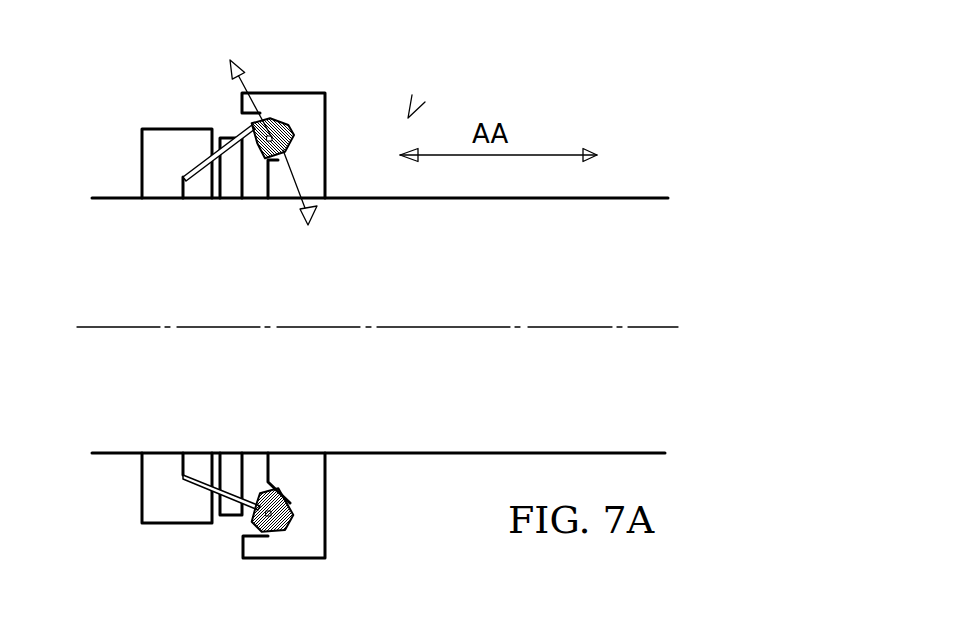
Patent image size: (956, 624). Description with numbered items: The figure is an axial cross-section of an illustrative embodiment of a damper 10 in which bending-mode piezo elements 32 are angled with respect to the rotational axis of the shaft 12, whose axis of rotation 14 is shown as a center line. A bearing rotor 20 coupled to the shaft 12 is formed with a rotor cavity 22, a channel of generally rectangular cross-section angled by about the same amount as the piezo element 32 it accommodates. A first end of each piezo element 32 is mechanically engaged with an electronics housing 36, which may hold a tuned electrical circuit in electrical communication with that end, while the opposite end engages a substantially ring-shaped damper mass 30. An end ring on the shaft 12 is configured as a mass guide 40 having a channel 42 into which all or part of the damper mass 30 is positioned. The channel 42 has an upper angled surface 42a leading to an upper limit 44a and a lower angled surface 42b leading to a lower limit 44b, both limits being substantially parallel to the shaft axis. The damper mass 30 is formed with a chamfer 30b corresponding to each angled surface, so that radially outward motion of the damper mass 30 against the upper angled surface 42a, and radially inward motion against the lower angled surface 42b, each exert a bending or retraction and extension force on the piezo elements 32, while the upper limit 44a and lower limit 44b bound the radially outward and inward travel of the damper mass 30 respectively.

The damper 10 is at (408, 118).
The shaft 12 is at (447, 305).
The axis of rotation 14 is at (628, 327).
The bearing rotor 20 is at (248, 126).
The rotor cavity 22 is at (216, 178).
The damper mass 30 is at (276, 158).
The chamfer 30b is at (296, 500).
The piezo element 32 is at (203, 180).
The electronics housing 36 is at (142, 150).
The mass guide 40 is at (308, 100).
The channel 42 is at (248, 128).
The upper angled surface 42a is at (280, 120).
The lower angled surface 42b is at (293, 142).
The upper limit 44a is at (283, 490).
The lower limit 44b is at (253, 538).